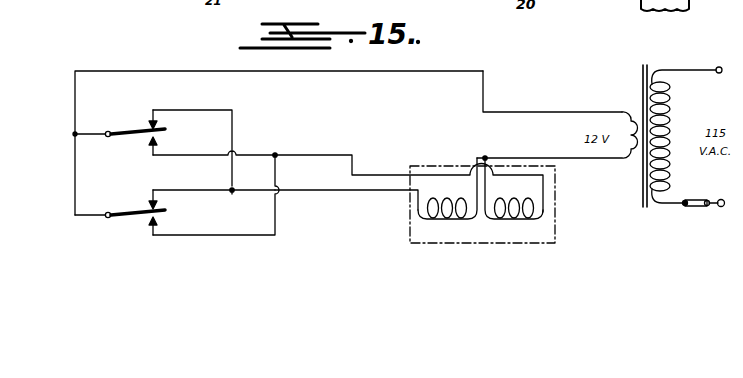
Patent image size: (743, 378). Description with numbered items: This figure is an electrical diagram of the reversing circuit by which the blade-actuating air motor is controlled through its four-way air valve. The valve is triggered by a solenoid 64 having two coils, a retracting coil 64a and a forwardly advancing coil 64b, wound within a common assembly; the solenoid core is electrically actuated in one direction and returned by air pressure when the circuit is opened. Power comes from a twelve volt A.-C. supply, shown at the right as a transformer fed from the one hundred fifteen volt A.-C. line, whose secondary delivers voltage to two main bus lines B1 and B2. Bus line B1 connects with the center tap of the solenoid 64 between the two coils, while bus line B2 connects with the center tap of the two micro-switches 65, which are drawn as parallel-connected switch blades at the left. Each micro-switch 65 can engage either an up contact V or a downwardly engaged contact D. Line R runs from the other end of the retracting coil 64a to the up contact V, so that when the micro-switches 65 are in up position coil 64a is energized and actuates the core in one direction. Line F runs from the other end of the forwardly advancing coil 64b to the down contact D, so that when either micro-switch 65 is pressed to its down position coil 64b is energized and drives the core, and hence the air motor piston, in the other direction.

The micro-switch 65 is at (125, 131).
The up contact V is at (149, 123).
The down contact D is at (149, 141).
The line R is at (339, 155).
The line F is at (320, 191).
The solenoid 64 is at (482, 205).
The retracting coil 64a is at (438, 220).
The forwardly advancing coil 64b is at (520, 220).
The main bus line B1 is at (595, 160).
The main bus line B2 is at (541, 111).